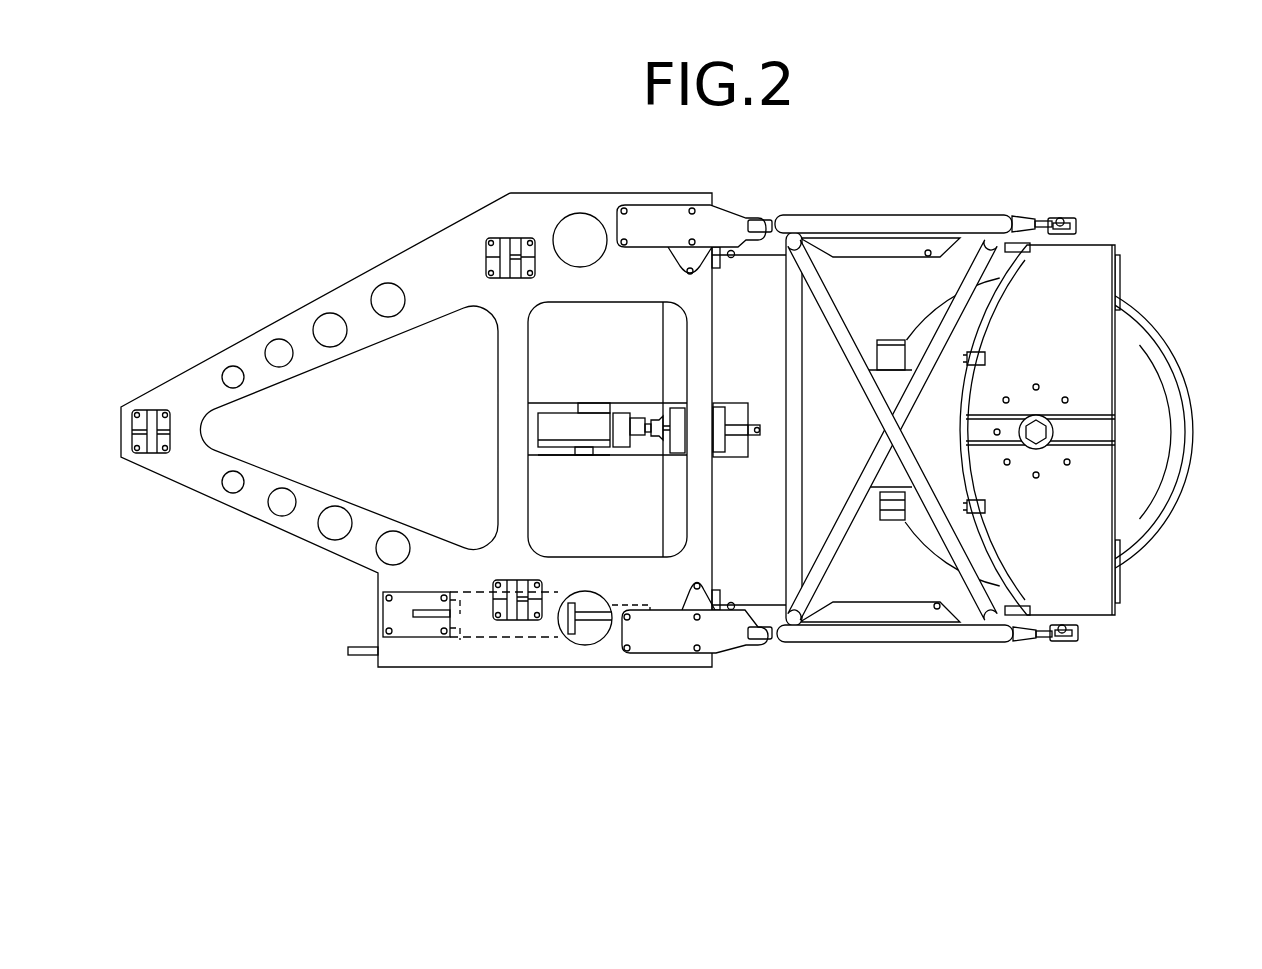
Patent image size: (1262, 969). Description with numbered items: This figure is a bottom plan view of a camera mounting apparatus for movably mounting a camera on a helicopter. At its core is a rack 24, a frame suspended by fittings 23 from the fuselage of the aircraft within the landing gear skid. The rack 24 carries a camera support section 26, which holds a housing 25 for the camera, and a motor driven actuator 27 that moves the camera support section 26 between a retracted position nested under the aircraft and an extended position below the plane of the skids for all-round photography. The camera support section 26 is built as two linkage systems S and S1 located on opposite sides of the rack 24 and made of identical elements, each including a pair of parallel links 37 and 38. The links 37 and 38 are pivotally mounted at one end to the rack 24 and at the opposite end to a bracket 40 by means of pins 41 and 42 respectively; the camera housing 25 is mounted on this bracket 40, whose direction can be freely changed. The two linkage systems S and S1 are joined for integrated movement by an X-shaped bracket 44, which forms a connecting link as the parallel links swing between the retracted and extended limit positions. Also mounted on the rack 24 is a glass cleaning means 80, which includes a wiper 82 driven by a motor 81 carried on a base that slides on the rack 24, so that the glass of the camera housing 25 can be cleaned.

The fittings 23 is at (147, 410).
The rack 24 is at (300, 305).
The housing 25 is at (1158, 326).
The camera support section 26 is at (948, 207).
The motor driven actuator 27 is at (502, 642).
The link 37 is at (868, 226).
The link 38 is at (883, 258).
The bracket 40 is at (1112, 253).
The pin 41 is at (760, 219).
The pin 42 is at (1062, 217).
The X-shaped bracket 44 is at (858, 382).
The glass cleaning means 80 is at (585, 458).
The motor 81 is at (560, 420).
The wiper 82 is at (760, 423).
The linkage system S is at (820, 226).
The linkage system S1 is at (827, 642).